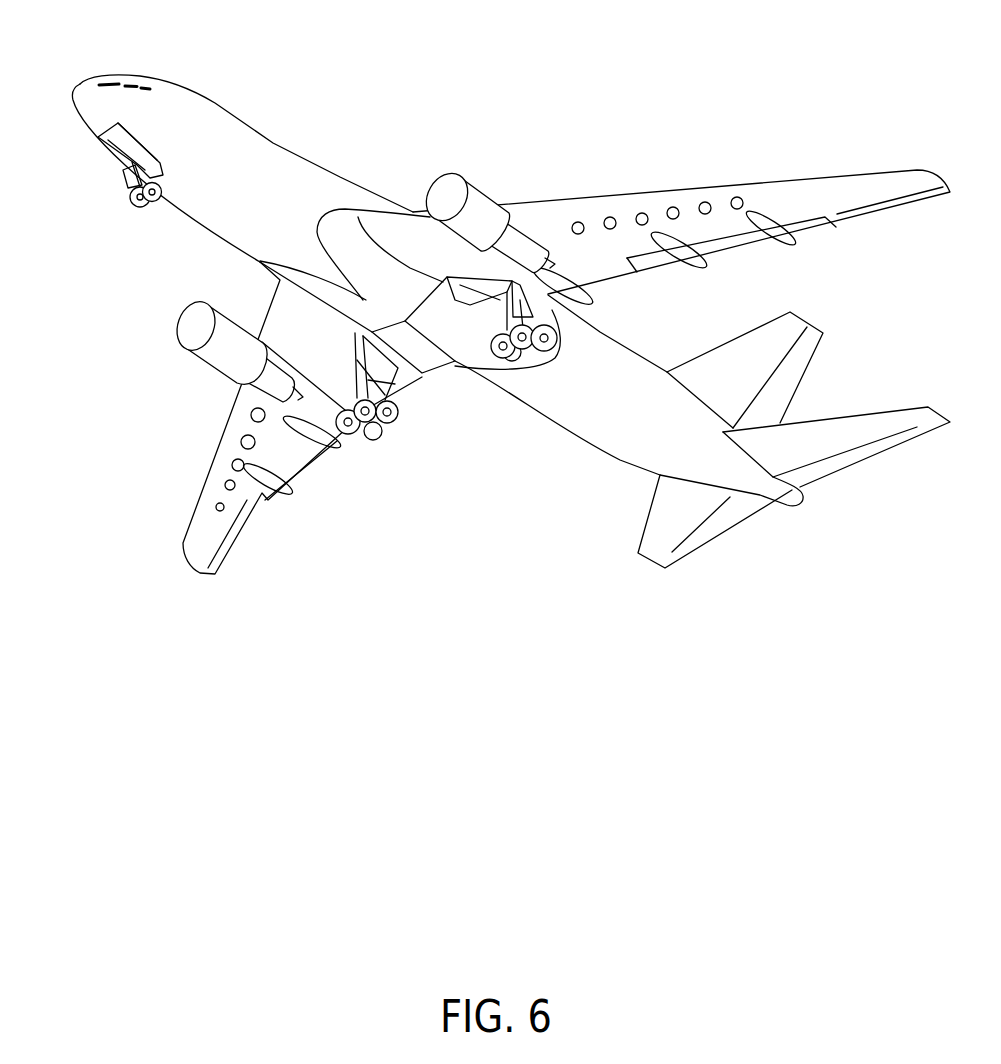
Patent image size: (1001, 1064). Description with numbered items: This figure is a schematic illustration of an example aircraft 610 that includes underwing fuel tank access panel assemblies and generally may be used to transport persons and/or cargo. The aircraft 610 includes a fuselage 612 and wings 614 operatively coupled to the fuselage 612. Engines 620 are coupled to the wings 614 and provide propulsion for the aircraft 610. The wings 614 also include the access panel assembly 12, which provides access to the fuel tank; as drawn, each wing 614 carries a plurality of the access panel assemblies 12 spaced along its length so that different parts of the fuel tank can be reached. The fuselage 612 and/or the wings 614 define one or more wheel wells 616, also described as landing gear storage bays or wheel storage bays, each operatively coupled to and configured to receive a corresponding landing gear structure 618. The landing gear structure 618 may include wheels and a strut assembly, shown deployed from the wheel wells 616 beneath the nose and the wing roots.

The aircraft 610 is at (483, 100).
The fuselage 612 is at (217, 100).
The wings 614 is at (642, 191).
The wheel wells 616 is at (117, 155).
The landing gear structure 618 is at (122, 202).
The engines 620 is at (481, 177).
The access panel assembly 12 is at (750, 202).